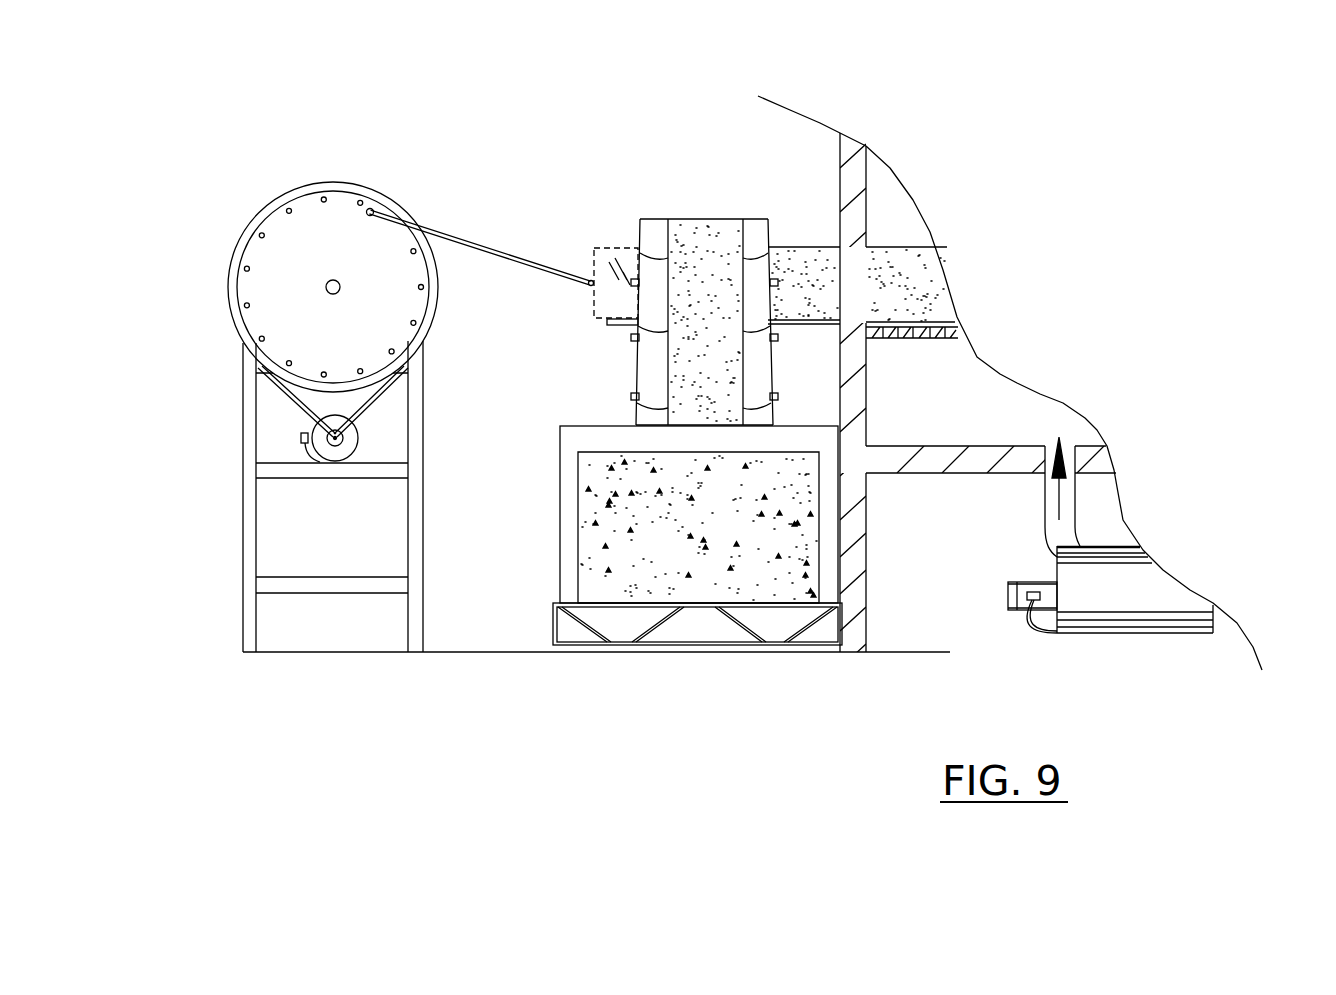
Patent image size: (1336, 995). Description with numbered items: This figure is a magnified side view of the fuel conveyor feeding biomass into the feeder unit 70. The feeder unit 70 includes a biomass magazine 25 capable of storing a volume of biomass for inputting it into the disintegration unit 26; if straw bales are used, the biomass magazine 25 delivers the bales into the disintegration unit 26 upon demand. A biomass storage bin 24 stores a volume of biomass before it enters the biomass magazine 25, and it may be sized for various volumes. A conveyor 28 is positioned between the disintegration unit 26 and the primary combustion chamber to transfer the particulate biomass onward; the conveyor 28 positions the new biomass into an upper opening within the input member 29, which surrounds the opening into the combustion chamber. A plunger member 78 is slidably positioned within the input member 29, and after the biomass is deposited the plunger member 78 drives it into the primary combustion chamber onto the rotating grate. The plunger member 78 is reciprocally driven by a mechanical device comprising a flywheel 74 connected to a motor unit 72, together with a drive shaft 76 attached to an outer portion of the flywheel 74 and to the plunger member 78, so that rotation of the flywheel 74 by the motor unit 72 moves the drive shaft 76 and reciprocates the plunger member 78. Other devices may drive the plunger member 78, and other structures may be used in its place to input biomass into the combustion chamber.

The biomass storage bin 24 is at (678, 559).
The biomass magazine 25 is at (748, 633).
The disintegration unit 26 is at (560, 482).
The conveyor 28 is at (655, 218).
The input member 29 is at (811, 325).
The feeder unit 70 is at (786, 238).
The motor unit 72 is at (333, 447).
The flywheel 74 is at (292, 229).
The drive shaft 76 is at (485, 247).
The plunger member 78 is at (606, 297).